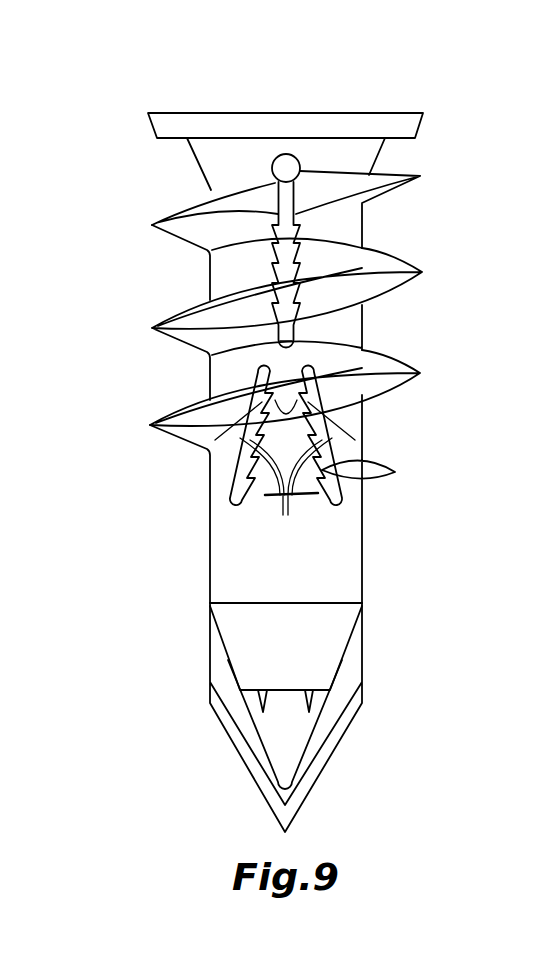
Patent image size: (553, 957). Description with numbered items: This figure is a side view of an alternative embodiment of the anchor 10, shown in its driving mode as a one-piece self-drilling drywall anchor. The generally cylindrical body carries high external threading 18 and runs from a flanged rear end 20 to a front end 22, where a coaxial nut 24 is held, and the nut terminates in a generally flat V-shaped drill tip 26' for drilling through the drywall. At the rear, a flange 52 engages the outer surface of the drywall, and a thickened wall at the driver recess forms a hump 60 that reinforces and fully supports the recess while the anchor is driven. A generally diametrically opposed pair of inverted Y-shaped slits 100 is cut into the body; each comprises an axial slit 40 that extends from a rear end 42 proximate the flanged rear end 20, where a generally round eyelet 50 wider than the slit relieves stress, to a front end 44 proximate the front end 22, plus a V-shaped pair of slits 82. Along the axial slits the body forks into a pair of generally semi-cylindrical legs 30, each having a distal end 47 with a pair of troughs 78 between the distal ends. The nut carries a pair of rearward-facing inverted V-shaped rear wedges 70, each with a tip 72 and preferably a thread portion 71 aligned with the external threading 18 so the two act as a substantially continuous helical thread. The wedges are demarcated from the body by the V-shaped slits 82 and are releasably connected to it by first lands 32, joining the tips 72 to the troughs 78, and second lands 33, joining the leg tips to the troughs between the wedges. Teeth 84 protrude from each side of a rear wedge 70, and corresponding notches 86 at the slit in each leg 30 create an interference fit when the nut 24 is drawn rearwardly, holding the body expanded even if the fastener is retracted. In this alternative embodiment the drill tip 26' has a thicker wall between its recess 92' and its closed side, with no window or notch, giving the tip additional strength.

The anchor 10 is at (466, 333).
The external threading 18 is at (390, 260).
The flanged rear end 20 is at (137, 127).
The front end 22 is at (136, 450).
The nut 24 is at (310, 583).
The drill tip 26' is at (288, 717).
The legs 30 is at (365, 340).
The first lands 32 is at (365, 398).
The second lands 33 is at (217, 505).
The slits 40 is at (200, 240).
The rear end of slit 42 is at (198, 196).
The front end of slit 44 is at (302, 337).
The distal ends 47 is at (152, 425).
The eyelet 50 is at (284, 165).
The flange 52 is at (212, 115).
The hump 60 is at (198, 167).
The rear wedges 70 is at (210, 455).
The thread portion 71 is at (338, 450).
The tip 72 is at (350, 416).
The troughs 78 is at (253, 364).
The V-shaped slits 82 is at (240, 478).
The teeth 84 is at (288, 518).
The notches 86 is at (272, 289).
The recess 92' is at (332, 724).
The inverted Y-shaped slits 100 is at (240, 368).